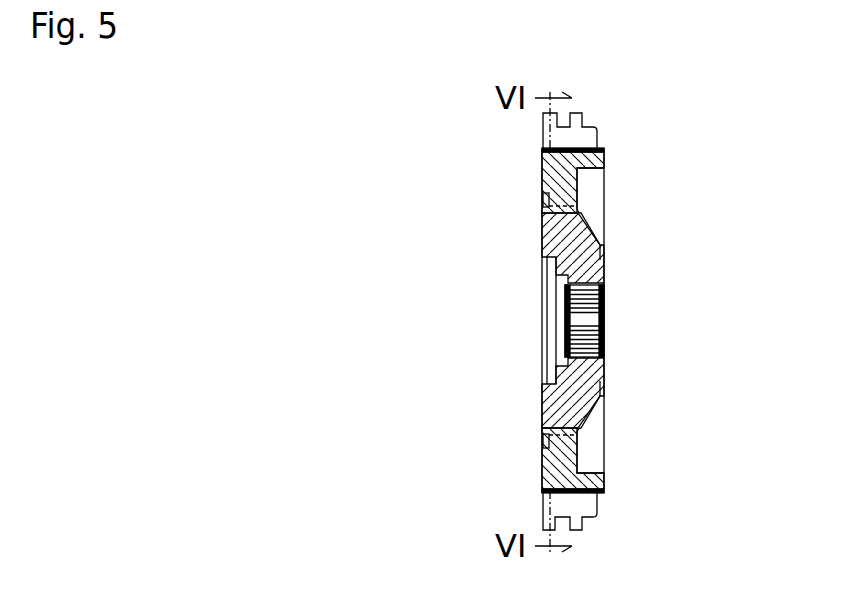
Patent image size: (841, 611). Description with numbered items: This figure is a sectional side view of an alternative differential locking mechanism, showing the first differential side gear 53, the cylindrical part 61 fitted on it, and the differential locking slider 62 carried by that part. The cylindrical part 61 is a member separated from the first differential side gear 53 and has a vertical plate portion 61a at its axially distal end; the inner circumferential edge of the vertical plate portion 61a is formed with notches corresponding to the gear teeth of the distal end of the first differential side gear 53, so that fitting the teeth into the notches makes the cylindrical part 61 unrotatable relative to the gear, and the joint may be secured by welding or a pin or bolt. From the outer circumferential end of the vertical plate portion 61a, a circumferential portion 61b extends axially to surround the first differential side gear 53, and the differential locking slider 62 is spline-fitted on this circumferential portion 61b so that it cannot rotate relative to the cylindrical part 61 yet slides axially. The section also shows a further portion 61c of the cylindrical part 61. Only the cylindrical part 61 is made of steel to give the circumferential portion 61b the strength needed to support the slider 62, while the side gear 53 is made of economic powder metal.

The first differential side gear 53 is at (604, 263).
The cylindrical part 61 is at (604, 208).
The vertical plate portion 61a is at (552, 173).
The circumferential portion 61b is at (604, 181).
The lower holder block 61c is at (578, 432).
The differential locking slider 62 is at (597, 128).